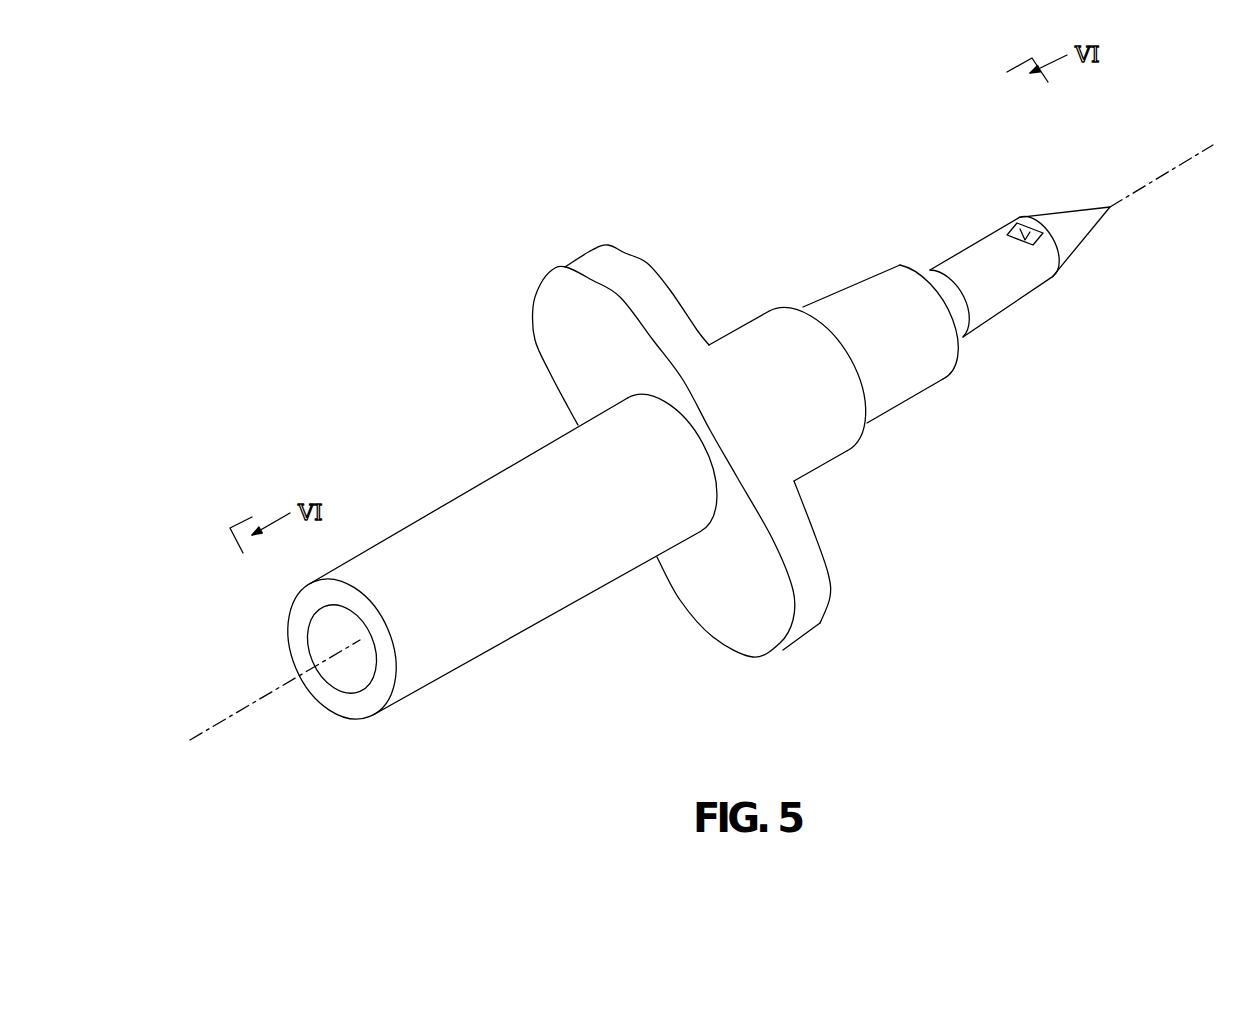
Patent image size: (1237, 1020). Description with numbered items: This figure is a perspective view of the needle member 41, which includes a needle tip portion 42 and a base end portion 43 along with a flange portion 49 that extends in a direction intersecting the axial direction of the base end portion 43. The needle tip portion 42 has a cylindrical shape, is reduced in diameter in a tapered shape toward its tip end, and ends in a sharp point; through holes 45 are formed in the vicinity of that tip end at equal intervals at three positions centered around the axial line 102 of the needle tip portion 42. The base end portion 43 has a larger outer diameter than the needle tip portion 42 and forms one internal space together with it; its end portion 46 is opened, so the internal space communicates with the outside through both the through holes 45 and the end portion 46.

The needle member 41 is at (777, 265).
The needle tip portion 42 is at (985, 283).
The base end portion 43 is at (545, 585).
The through hole 45 is at (1015, 227).
The end portion 46 is at (316, 628).
The flange portion 49 is at (807, 620).
The axial line 102 is at (1152, 182).